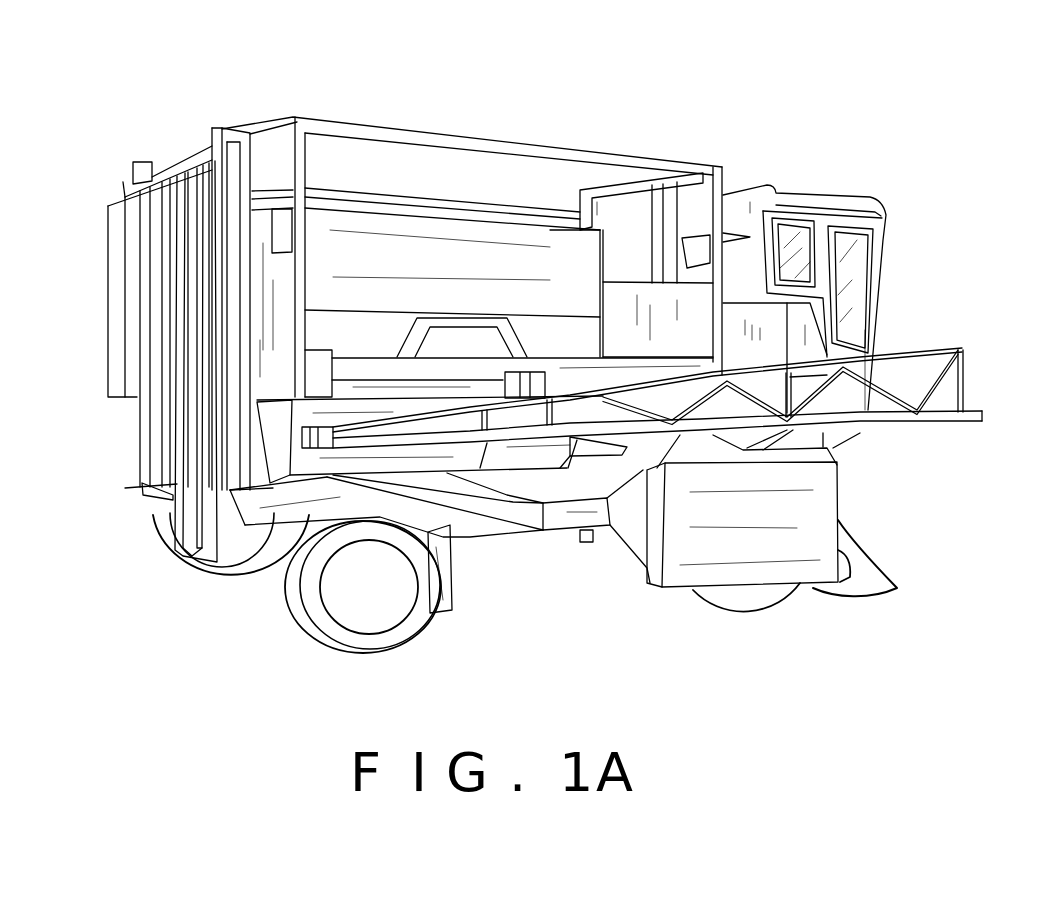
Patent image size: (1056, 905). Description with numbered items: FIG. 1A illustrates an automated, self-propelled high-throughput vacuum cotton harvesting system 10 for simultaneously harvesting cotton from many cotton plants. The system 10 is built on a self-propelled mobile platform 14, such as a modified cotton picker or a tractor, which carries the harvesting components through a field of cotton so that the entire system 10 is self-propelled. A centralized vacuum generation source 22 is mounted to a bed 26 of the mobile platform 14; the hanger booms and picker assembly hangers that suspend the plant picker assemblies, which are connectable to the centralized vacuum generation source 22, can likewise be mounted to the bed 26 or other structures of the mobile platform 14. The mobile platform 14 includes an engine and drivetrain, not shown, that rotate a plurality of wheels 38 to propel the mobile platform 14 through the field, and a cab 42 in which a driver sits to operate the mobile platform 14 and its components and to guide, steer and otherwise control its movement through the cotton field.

The system 10 is at (705, 130).
The self-propelled mobile platform 14 is at (883, 286).
The centralized vacuum generation source 22 is at (485, 252).
The bed 26 is at (348, 375).
The wheels 38 is at (362, 607).
The cab 42 is at (880, 300).